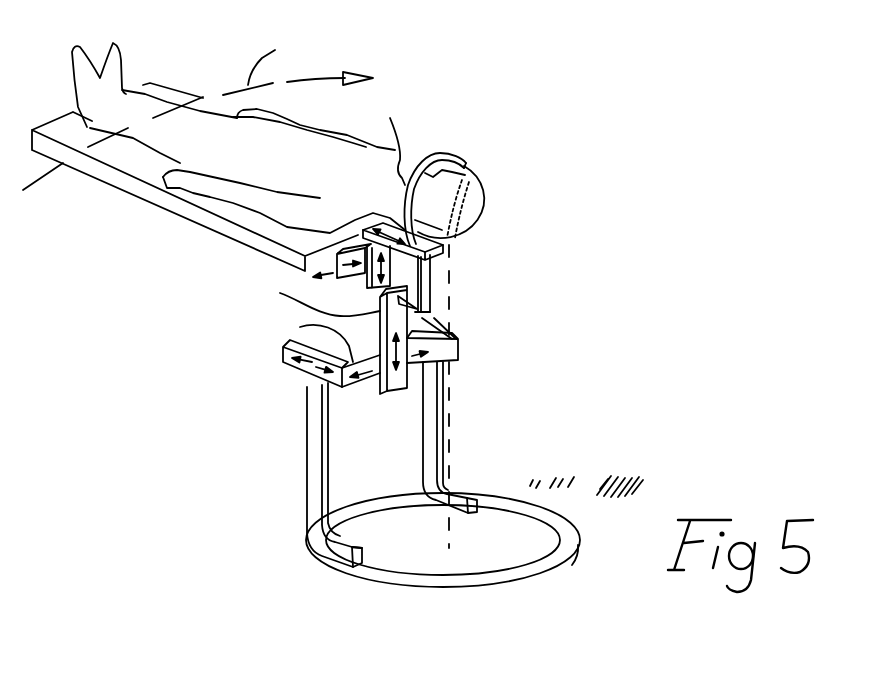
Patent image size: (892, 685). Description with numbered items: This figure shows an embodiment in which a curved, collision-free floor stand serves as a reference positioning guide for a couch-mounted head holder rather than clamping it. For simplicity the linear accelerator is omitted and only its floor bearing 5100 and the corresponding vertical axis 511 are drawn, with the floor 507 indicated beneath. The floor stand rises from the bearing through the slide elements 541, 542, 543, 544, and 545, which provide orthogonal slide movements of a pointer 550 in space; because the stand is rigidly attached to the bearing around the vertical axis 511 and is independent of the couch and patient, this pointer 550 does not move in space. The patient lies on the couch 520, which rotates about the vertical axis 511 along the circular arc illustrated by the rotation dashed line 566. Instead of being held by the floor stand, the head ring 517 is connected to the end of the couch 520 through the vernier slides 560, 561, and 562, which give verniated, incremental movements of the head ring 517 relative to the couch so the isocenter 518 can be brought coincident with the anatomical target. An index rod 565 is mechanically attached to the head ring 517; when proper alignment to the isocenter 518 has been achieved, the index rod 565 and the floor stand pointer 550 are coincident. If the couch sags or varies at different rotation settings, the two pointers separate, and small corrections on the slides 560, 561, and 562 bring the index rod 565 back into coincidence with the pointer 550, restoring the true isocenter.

The couch 520 is at (118, 188).
The rotation dashed line 566 is at (328, 57).
The vernier slide 562 is at (377, 228).
The head ring 517 is at (453, 148).
The isocenter 518 is at (447, 202).
The vernier slide 561 is at (433, 270).
The index rod 565 is at (432, 298).
The floor stand slide 545 is at (452, 310).
The floor stand slide 544 is at (300, 327).
The floor stand slide 543 is at (287, 368).
The floor stand slide 542 is at (448, 407).
The floor stand slide 541 is at (305, 488).
The vertical axis 511 is at (450, 452).
The floor 507 is at (640, 472).
The floor bearing 5100 is at (545, 572).
The pointer 550 is at (280, 293).
The vernier slide 560 is at (303, 279).